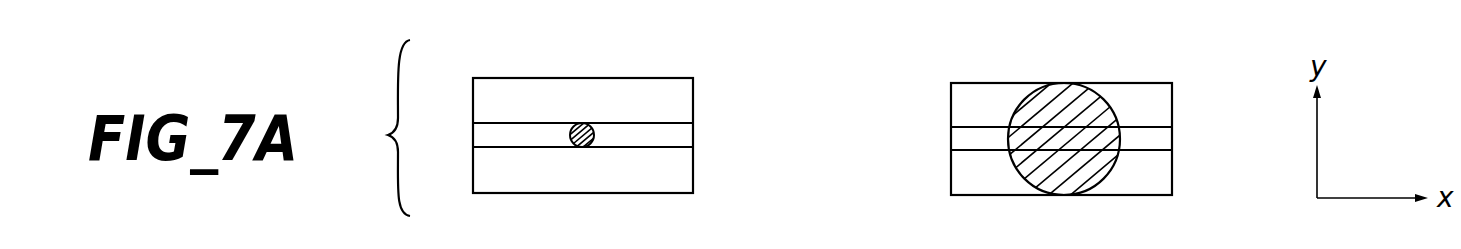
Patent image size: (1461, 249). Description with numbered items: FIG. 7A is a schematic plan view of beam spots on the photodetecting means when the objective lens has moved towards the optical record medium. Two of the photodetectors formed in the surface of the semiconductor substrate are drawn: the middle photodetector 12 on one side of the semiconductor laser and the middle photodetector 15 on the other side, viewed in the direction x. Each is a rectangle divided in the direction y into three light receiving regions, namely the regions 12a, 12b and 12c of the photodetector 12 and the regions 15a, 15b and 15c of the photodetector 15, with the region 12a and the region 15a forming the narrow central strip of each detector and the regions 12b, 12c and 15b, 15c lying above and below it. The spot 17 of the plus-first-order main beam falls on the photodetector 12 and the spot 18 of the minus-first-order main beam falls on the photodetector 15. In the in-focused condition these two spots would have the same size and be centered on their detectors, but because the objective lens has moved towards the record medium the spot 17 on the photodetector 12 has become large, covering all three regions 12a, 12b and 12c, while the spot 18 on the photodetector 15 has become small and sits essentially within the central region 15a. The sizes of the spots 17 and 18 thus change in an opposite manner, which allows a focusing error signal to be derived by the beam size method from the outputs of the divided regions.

The photodetector 12 is at (1099, 107).
The light receiving region 12a is at (1172, 140).
The light receiving region 12b is at (1172, 104).
The light receiving region 12c is at (1172, 177).
The photodetector 15 is at (618, 104).
The light receiving region 15a is at (693, 135).
The light receiving region 15b is at (693, 101).
The light receiving region 15c is at (693, 171).
The spot 17 is at (1028, 96).
The spot 18 is at (595, 130).